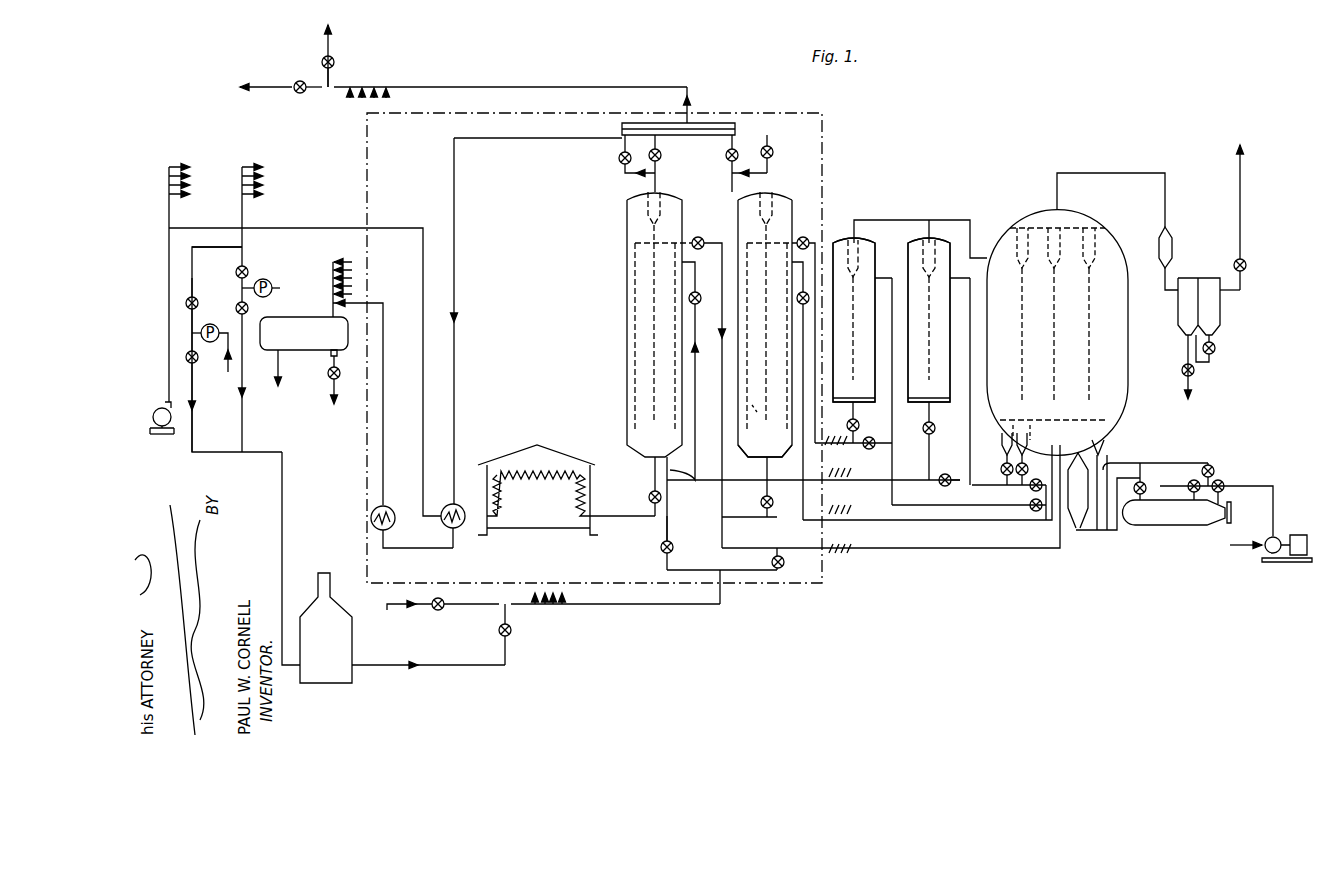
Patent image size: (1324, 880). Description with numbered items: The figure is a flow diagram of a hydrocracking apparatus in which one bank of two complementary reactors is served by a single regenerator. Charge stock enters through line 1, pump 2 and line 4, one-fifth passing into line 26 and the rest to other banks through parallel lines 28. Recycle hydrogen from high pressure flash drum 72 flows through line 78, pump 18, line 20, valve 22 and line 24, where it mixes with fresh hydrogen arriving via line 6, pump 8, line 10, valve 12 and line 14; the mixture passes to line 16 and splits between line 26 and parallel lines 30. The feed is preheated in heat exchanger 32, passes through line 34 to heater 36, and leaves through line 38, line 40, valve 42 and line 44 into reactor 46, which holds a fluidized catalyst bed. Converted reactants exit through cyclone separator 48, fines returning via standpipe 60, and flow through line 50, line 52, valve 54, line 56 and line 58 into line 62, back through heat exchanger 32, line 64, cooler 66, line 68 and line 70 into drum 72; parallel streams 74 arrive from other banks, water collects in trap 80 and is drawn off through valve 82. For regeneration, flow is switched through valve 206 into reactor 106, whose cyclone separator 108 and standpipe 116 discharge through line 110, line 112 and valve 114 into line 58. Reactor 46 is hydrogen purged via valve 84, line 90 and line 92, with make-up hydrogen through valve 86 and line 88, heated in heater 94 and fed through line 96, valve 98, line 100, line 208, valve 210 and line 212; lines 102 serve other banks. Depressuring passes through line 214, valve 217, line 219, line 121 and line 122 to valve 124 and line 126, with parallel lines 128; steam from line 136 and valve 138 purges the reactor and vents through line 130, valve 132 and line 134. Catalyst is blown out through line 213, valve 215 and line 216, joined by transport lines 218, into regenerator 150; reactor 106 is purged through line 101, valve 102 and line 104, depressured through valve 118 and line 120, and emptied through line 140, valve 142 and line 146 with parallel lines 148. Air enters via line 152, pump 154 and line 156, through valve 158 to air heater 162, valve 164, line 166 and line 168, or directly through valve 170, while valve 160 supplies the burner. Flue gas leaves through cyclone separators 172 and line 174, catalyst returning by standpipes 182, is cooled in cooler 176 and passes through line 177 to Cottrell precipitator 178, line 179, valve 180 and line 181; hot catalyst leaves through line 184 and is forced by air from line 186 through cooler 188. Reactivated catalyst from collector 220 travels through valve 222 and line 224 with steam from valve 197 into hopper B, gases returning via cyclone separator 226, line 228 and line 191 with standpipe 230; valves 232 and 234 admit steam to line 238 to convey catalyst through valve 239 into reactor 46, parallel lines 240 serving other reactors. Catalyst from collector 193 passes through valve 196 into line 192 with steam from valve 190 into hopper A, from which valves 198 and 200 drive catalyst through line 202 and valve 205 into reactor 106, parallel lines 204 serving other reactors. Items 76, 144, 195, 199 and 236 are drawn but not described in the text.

The line 1 is at (167, 430).
The pump 2 is at (160, 409).
The line 4 is at (168, 300).
The line 6 is at (232, 363).
The pump 8 is at (218, 342).
The line 10 is at (210, 324).
The valve 12 is at (198, 303).
The line 14 is at (226, 252).
The line 16 is at (244, 239).
The pump 18 is at (271, 283).
The line 20 is at (253, 288).
The valve 22 is at (236, 272).
The line 24 is at (244, 266).
The line 26 is at (290, 228).
The parallel lines 28 is at (190, 186).
The parallel lines 30 is at (263, 186).
The heat exchanger 32 is at (458, 529).
The line 34 is at (455, 505).
The heater 36 is at (520, 455).
The line 38 is at (616, 516).
The line 40 is at (628, 518).
The valve 42 is at (650, 494).
The line 44 is at (655, 462).
The reactor 46 is at (626, 272).
The cyclone separator 48 is at (630, 207).
The line 50 is at (660, 180).
The line 52 is at (660, 165).
The valve 54 is at (661, 155).
The line 56 is at (655, 135).
The line 58 is at (508, 140).
The standpipe 60 is at (655, 262).
The line 62 is at (456, 266).
The line 64 is at (410, 549).
The cooler 66 is at (389, 529).
The line 68 is at (384, 300).
The line 70 is at (334, 287).
The high pressure flash drum 72 is at (304, 333).
The parallel streams 74 is at (333, 262).
The line 76 is at (280, 362).
The line 78 is at (280, 289).
The trap 80 is at (338, 354).
The valve 82 is at (337, 388).
The valve 84 is at (248, 308).
The valve 86 is at (195, 345).
The line 88 is at (196, 407).
The line 90 is at (244, 410).
The line 92 is at (283, 513).
The heater 94 is at (352, 650).
The line 96 is at (445, 666).
The valve 98 is at (510, 633).
The line 100 is at (620, 606).
The line 101 is at (732, 580).
The valve 102 is at (561, 602).
The line 104 is at (770, 519).
The reactor 106 is at (737, 209).
The cyclone separator 108 is at (768, 196).
The line 110 is at (745, 177).
The line 112 is at (772, 157).
The valve 114 is at (770, 147).
The standpipe 116 is at (785, 446).
The valve 118 is at (735, 149).
The line 120 is at (718, 124).
The line 121 is at (690, 87).
The line 122 is at (486, 87).
The valve 124 is at (293, 91).
The line 126 is at (235, 84).
The lines 128 is at (352, 100).
The line 130 is at (333, 78).
The valve 132 is at (335, 62).
The line 134 is at (321, 56).
The line 136 is at (388, 611).
The valve 138 is at (438, 610).
The line 140 is at (772, 405).
The valve 142 is at (810, 237).
The line 144 is at (792, 478).
The line 146 is at (918, 521).
The parallel lines 148 is at (840, 501).
The regenerator 150 is at (1130, 350).
The line 152 is at (1240, 548).
The pump 154 is at (1273, 562).
The line 156 is at (1273, 486).
The valve 158 is at (1188, 486).
The valve 160 is at (1224, 488).
The air heater 162 is at (1158, 528).
The valve 164 is at (1143, 495).
The line 166 is at (1166, 463).
The line 168 is at (1118, 463).
The valve 170 is at (1215, 471).
The cyclone separators 172 is at (1028, 272).
The line 174 is at (1135, 173).
The cooler 176 is at (1173, 241).
The line 177 is at (1165, 287).
The Cottrell precipitator 178 is at (1195, 281).
The line 179 is at (1232, 291).
The valve 180 is at (1246, 266).
The line 181 is at (1242, 181).
The standpipes 182 is at (1095, 312).
The line 184 is at (1076, 433).
The line 186 is at (1107, 535).
The cooler 188 is at (1078, 530).
The valve 190 is at (1040, 521).
The line 191 is at (905, 220).
The line 192 is at (920, 505).
The collector 193 is at (1030, 428).
The tube 195 is at (858, 251).
The valve 196 is at (1052, 450).
The valve 197 is at (1031, 493).
The valve 198 is at (858, 423).
The vessel 199 is at (858, 292).
The valve 200 is at (860, 447).
The line 202 is at (792, 393).
The parallel lines 204 is at (853, 429).
The valve 205 is at (797, 296).
The valve 206 is at (762, 497).
The line 208 is at (710, 570).
The valve 210 is at (661, 547).
The line 212 is at (669, 531).
The line 213 is at (634, 308).
The line 214 is at (625, 175).
The valve 215 is at (706, 234).
The line 216 is at (698, 483).
The valve 217 is at (619, 163).
The parallel catalyst transport lines 218 is at (846, 546).
The line 219 is at (621, 150).
The collector 220 is at (1002, 448).
The valve 222 is at (1000, 468).
The line 224 is at (972, 345).
The cyclone separator 226 is at (934, 251).
The line 228 is at (930, 222).
The standpipe 230 is at (935, 372).
The valve 232 is at (950, 472).
The valve 234 is at (935, 426).
The line 236 is at (928, 437).
The line 238 is at (910, 478).
The valve 239 is at (689, 302).
The parallel lines 240 is at (840, 464).
The hopper A is at (852, 310).
The hopper B is at (938, 320).